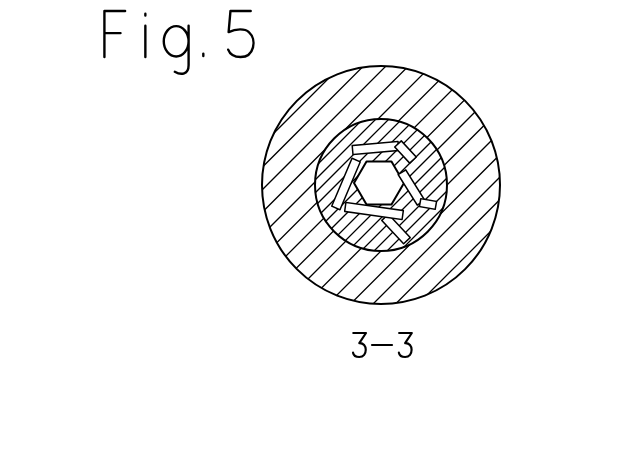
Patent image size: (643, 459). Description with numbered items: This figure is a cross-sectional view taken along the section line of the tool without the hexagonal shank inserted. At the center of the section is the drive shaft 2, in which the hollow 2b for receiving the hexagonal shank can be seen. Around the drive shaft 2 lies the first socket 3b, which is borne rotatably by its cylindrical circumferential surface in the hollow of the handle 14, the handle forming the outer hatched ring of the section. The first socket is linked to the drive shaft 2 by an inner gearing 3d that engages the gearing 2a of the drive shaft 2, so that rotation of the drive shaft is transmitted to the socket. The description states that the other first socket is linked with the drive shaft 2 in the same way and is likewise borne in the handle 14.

The handle 14 is at (359, 186).
The drive shaft 2 is at (388, 146).
The gearing 2a is at (282, 240).
The hollow 2b is at (480, 158).
The first socket 3b is at (503, 202).
The inner gearing 3d is at (460, 264).